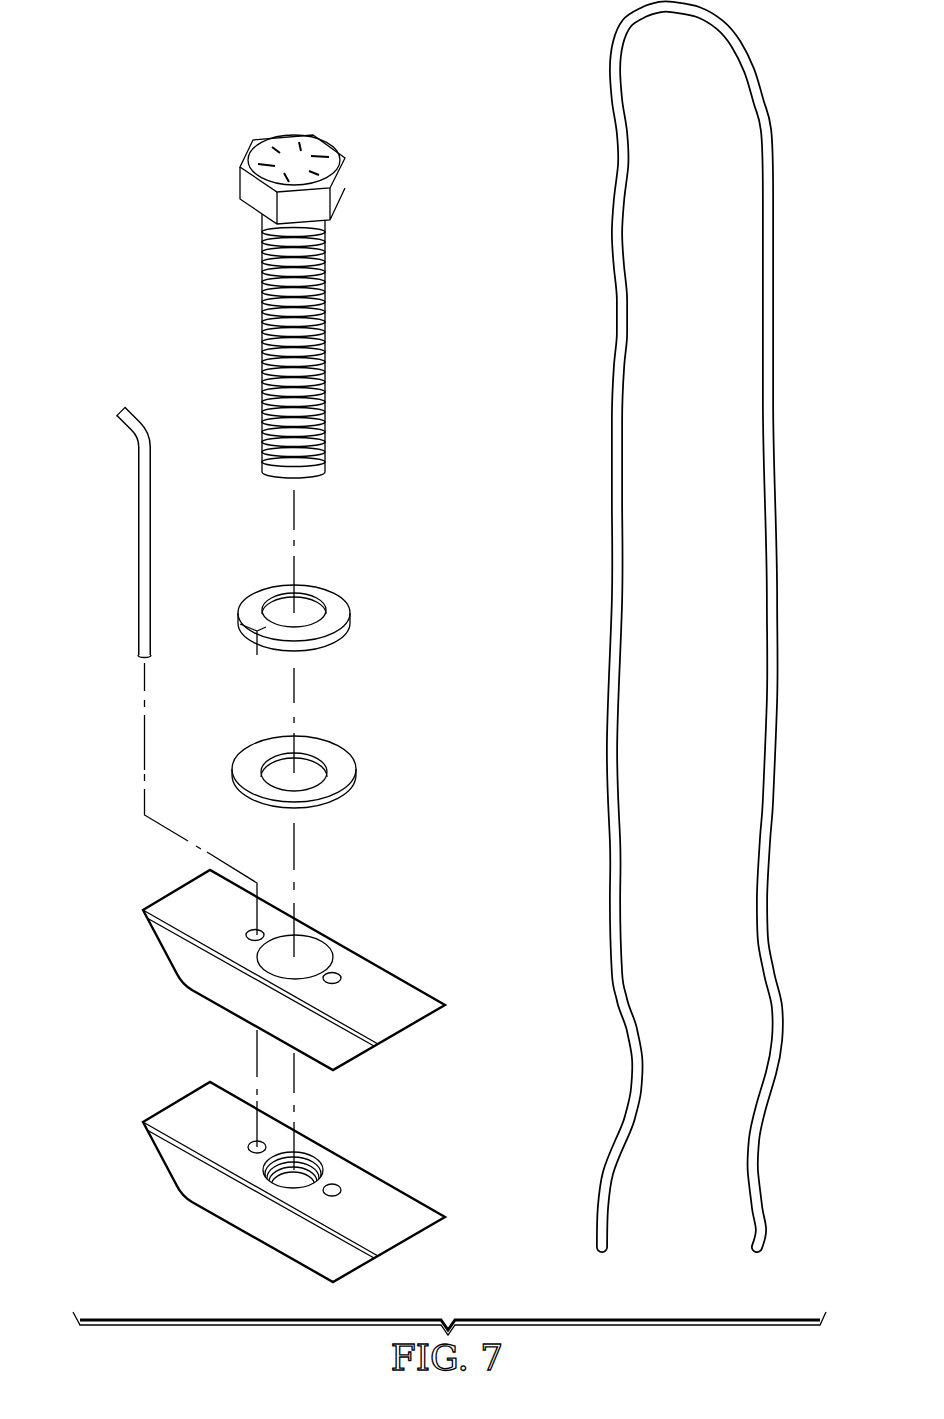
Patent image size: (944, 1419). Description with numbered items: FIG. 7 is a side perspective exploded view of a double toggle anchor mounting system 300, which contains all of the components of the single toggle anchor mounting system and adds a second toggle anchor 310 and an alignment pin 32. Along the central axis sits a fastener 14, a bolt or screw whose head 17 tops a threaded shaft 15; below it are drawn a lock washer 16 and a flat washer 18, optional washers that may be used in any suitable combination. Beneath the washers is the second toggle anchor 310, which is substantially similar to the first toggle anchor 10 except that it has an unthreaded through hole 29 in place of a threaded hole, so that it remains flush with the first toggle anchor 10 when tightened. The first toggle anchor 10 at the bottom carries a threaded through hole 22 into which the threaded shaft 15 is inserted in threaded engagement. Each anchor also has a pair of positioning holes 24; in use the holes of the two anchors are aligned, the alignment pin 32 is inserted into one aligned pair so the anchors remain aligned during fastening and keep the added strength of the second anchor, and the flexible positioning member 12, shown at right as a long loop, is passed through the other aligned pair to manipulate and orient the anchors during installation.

The double toggle anchor mounting system 300 is at (145, 102).
The fastener 14 is at (370, 279).
The head 17 is at (325, 141).
The threaded shaft 15 is at (327, 388).
The lock washer 16 is at (351, 620).
The flat washer 18 is at (358, 778).
The alignment pin 32 is at (138, 532).
The second toggle anchor 310 is at (165, 953).
The toggle anchor 10 is at (167, 1165).
The positioning holes 24 is at (262, 930).
The unthreaded through hole 29 is at (313, 976).
The threaded through hole 22 is at (320, 1164).
The flexible positioning member 12 is at (774, 387).